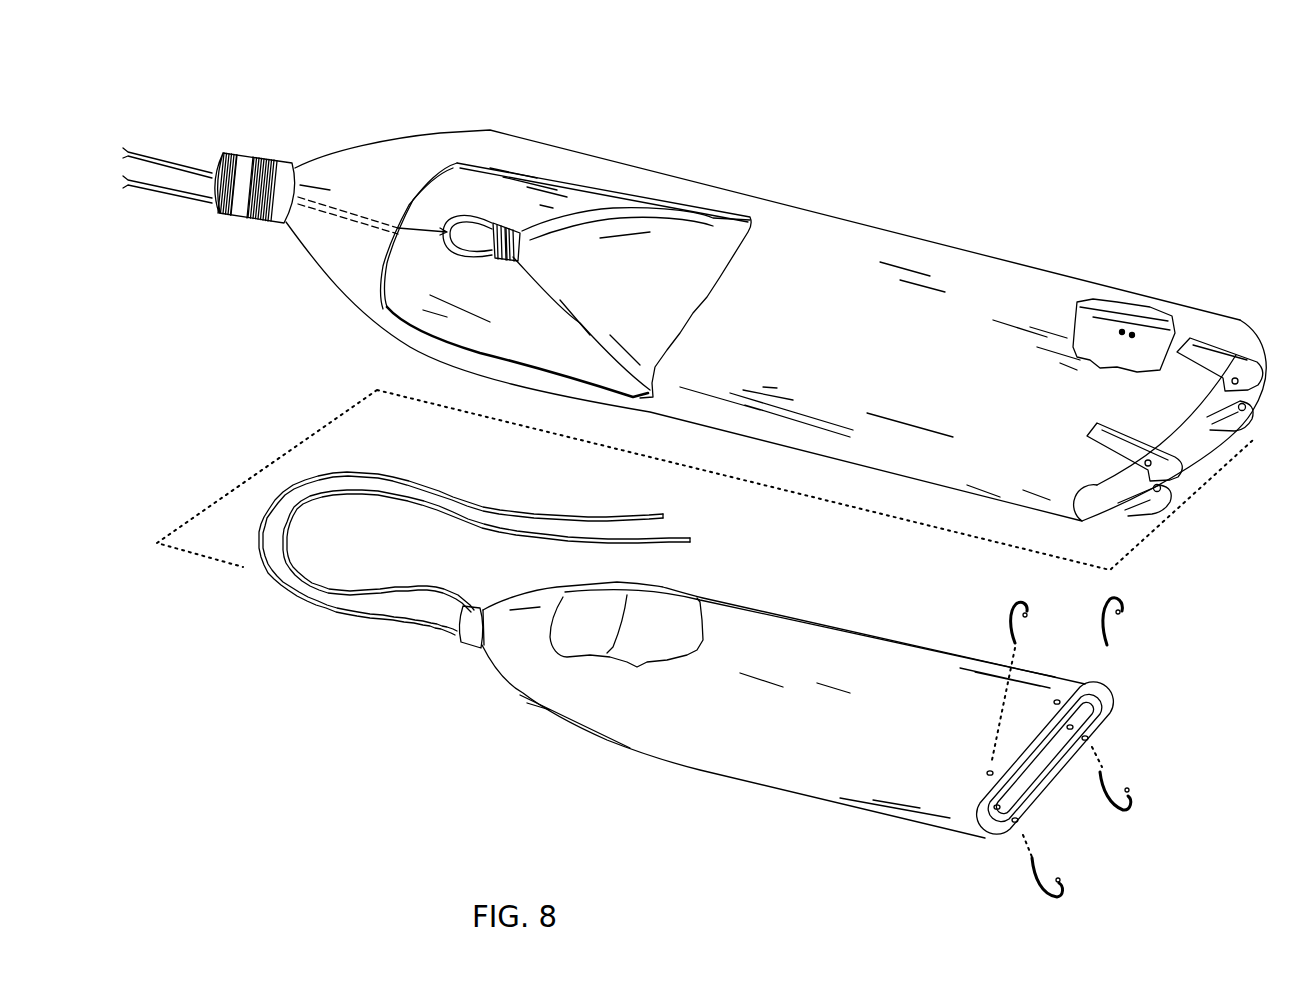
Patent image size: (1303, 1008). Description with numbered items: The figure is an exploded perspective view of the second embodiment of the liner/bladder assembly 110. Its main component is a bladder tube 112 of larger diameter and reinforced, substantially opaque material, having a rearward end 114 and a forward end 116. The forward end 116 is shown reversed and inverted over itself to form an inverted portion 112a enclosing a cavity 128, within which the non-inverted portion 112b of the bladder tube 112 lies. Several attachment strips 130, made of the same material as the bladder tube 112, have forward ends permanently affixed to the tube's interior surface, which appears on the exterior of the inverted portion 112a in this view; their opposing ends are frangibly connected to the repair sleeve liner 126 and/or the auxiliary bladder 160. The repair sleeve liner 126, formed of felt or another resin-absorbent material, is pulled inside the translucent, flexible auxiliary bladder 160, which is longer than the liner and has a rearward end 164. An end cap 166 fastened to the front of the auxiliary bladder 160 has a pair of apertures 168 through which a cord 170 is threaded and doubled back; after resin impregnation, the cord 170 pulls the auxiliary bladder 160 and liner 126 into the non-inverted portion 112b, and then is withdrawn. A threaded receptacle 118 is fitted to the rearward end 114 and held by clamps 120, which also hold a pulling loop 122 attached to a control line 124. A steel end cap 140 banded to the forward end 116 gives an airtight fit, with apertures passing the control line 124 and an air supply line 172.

The liner/bladder assembly 110 is at (1003, 167).
The bladder tube 112 is at (793, 208).
The inverted portion 112a is at (870, 265).
The non-inverted portion 112b is at (670, 230).
The rearward end 114 is at (603, 233).
The forward end 116 is at (345, 265).
The threaded receptacle 118 is at (520, 231).
The clamps 120 is at (507, 227).
The pulling loop 122 is at (463, 208).
The control line 124 is at (150, 152).
The repair sleeve liner 126 is at (673, 613).
The cavity 128 is at (433, 293).
The attachment strips 130 is at (1263, 400).
The steel end cap 140 is at (252, 166).
The auxiliary bladder 160 is at (790, 753).
The rearward end 164 is at (968, 820).
The end cap 166 is at (463, 620).
The apertures 168 is at (470, 613).
The cord 170 is at (568, 540).
The air supply line 172 is at (187, 201).